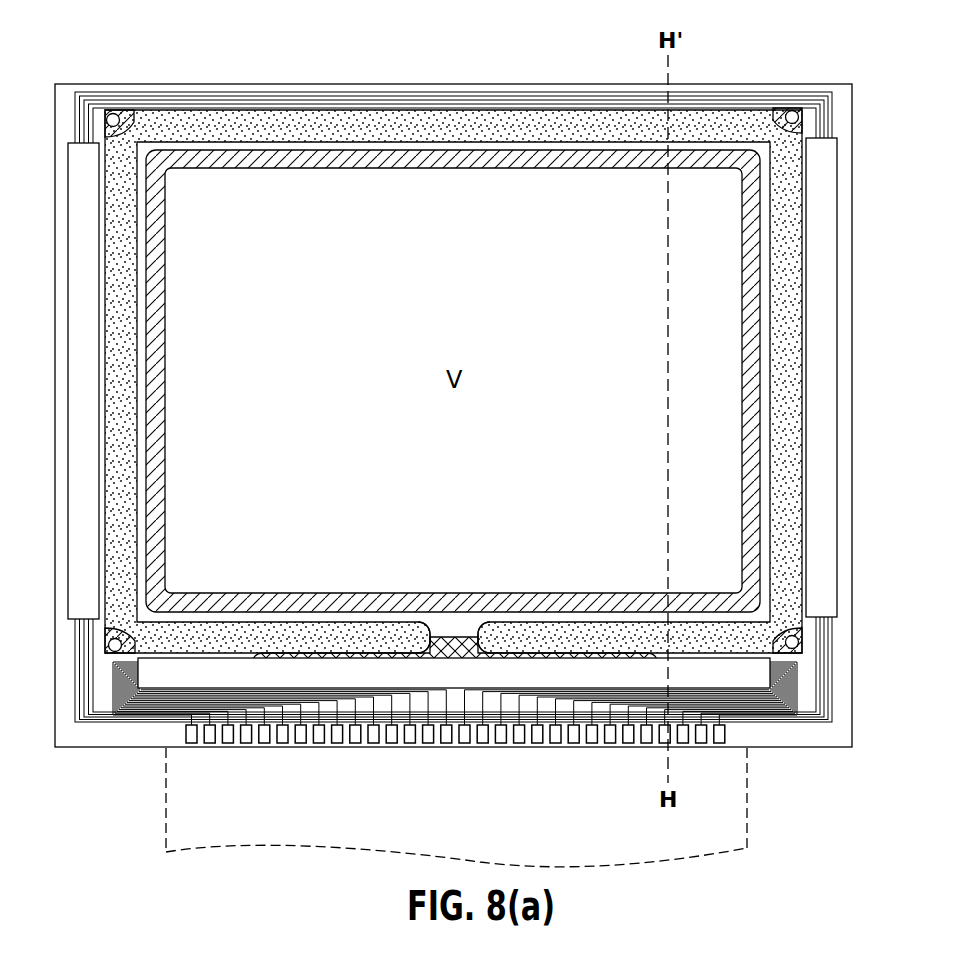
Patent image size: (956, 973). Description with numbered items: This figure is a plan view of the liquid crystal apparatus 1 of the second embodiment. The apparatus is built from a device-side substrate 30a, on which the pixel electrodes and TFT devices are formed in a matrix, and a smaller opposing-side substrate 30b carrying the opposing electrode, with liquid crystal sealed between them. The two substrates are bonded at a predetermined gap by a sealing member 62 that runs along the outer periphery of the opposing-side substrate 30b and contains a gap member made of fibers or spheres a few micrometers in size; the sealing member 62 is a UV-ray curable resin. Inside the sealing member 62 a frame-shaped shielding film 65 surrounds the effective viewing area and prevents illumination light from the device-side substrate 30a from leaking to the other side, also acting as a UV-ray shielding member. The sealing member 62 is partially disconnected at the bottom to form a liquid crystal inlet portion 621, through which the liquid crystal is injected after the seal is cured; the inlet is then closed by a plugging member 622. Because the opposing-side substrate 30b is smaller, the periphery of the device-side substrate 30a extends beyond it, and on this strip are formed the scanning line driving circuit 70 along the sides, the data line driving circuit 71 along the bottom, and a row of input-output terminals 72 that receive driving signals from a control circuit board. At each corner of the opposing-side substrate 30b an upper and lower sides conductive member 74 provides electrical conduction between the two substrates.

The liquid crystal apparatus 1 is at (778, 48).
The device-side substrate 30a is at (269, 85).
The opposing-side substrate 30b is at (350, 85).
The sealing member 62 is at (790, 275).
The shielding film 65 is at (172, 291).
The scanning line driving circuit 70 is at (88, 463).
The data line driving circuit 71 is at (160, 677).
The input-output terminals 72 is at (424, 740).
The upper and lower sides conductive member 74 is at (110, 116).
The liquid crystal inlet portion 621 is at (442, 622).
The plugging member 622 is at (455, 637).